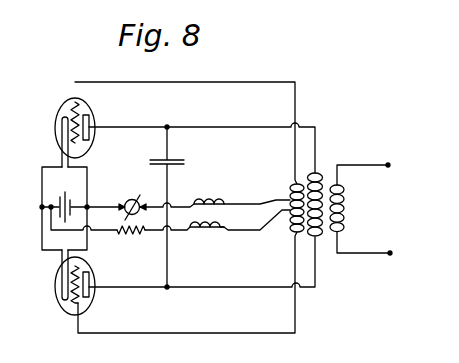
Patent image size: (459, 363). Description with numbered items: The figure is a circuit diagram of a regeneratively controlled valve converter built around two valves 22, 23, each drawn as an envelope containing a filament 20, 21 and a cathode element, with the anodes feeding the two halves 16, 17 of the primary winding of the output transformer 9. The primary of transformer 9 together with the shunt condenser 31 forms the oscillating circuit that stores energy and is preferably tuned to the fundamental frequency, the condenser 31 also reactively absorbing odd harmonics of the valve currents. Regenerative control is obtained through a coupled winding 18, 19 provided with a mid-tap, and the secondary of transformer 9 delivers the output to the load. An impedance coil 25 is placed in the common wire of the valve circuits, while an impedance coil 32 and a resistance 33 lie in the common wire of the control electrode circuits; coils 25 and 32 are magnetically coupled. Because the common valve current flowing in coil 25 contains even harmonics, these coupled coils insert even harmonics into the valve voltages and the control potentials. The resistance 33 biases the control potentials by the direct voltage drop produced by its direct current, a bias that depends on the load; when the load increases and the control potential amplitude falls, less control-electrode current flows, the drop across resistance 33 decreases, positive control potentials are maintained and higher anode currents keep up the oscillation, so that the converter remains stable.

The transformer 9 is at (319, 160).
The half of primary winding of transformer 16 is at (57, 113).
The half of primary winding of transformer 17 is at (62, 305).
The secondary winding 18 is at (290, 190).
The secondary winding 19 is at (291, 232).
The filament of tube 16 20 is at (80, 106).
The filament of tube 17 21 is at (80, 302).
The valve 22 is at (59, 130).
The valve 23 is at (57, 276).
The impedance coil 25 is at (222, 201).
The condenser 31 is at (176, 157).
The impedance coil 32 is at (206, 236).
The resistance 33 is at (128, 238).